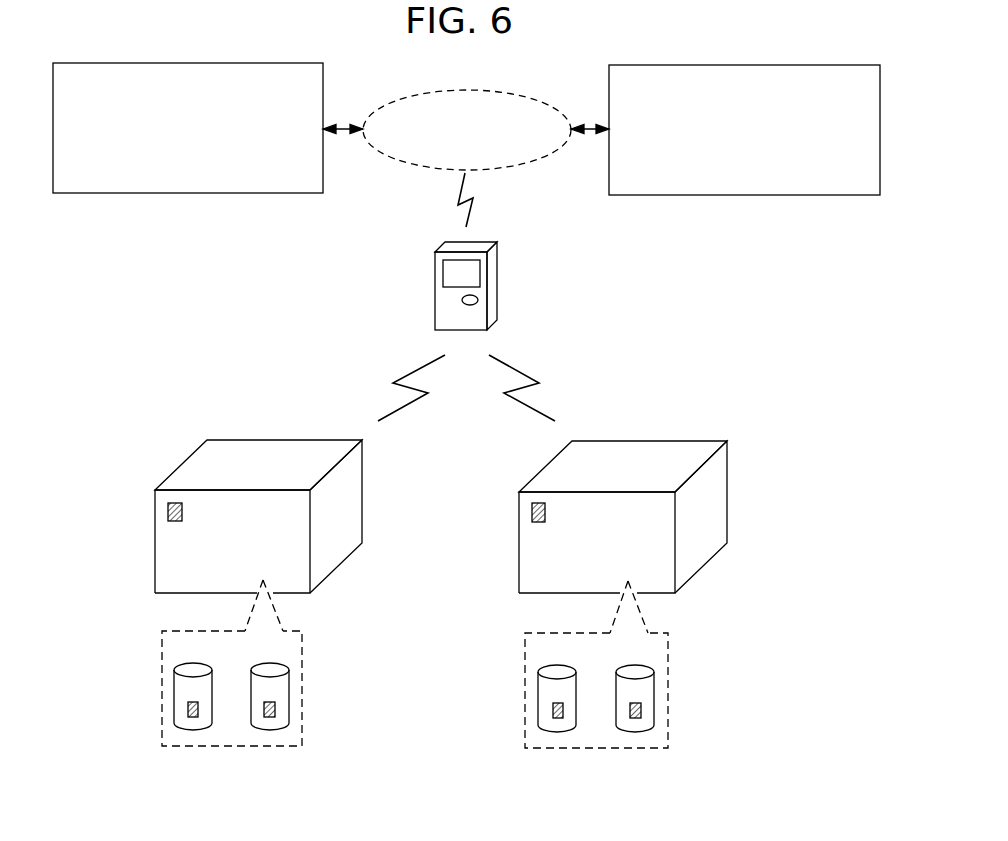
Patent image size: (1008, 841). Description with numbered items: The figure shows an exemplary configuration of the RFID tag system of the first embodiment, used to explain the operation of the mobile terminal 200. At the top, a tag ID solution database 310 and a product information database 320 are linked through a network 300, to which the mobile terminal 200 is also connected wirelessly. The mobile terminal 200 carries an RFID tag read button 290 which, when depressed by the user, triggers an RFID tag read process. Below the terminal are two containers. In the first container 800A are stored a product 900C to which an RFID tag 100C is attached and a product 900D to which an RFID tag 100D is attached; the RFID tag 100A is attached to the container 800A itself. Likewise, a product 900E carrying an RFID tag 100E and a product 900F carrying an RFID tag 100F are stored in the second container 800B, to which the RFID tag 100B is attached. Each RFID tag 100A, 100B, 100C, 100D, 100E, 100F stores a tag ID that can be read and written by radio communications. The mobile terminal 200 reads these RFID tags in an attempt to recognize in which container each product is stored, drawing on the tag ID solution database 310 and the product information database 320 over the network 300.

The tag ID solution database 310 is at (196, 63).
The product information database 320 is at (758, 65).
The network 300 is at (513, 90).
The mobile terminal 200 is at (436, 298).
The RFID tag read button 290 is at (478, 299).
The container 800A is at (269, 447).
The container 800B is at (648, 447).
The RFID tag 100A is at (167, 511).
The RFID tag 100B is at (531, 511).
The RFID tag 100C is at (187, 710).
The RFID tag 100D is at (276, 709).
The RFID tag 100E is at (552, 710).
The RFID tag 100F is at (641, 709).
The product 900C is at (190, 724).
The product 900D is at (270, 724).
The product 900E is at (555, 726).
The product 900F is at (633, 726).